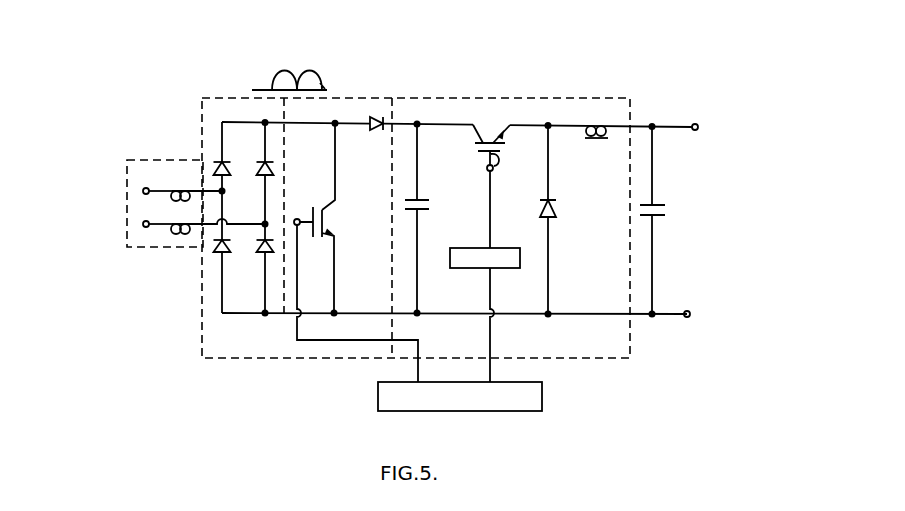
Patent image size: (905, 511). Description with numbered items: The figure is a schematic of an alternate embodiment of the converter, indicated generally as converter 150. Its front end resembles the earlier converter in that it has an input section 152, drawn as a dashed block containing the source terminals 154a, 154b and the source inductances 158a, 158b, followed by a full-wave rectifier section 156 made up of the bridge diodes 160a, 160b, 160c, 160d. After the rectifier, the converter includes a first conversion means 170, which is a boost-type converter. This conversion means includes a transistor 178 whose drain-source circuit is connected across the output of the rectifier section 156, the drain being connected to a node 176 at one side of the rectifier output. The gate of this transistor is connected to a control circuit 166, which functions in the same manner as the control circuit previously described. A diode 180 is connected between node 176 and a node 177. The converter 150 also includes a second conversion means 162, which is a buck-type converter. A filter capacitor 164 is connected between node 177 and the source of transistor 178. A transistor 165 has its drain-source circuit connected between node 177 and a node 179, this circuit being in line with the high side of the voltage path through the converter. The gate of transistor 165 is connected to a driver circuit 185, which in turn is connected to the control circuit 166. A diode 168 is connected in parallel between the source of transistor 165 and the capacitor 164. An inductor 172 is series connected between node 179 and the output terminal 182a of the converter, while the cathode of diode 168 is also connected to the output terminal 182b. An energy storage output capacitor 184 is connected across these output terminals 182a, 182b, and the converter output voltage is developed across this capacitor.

The converter 150 is at (545, 30).
The input section 152 is at (140, 154).
The input terminal 154a is at (143, 191).
The input terminal 154b is at (143, 226).
The full-wave rectifier section 156 is at (279, 367).
The source inductor 158a is at (176, 188).
The source inductor 158b is at (174, 231).
The rectifier diode 160a is at (218, 160).
The rectifier diode 160b is at (217, 254).
The rectifier diode 160c is at (260, 166).
The rectifier diode 160d is at (260, 250).
The second conversion means 162 is at (499, 95).
The filter capacitor 164 is at (418, 200).
The transistor 165 is at (513, 166).
The control circuit 166 is at (378, 395).
The diode 168 is at (547, 216).
The first conversion means 170 is at (405, 72).
The inductor 172 is at (606, 122).
The node 176 is at (334, 128).
The node 177 is at (417, 121).
The transistor 178 is at (322, 206).
The node 179 is at (547, 121).
The diode 180 is at (379, 131).
The output terminal 182a is at (698, 126).
The output terminal 182b is at (690, 312).
The energy storage output capacitor 184 is at (654, 203).
The driver circuit 185 is at (459, 232).